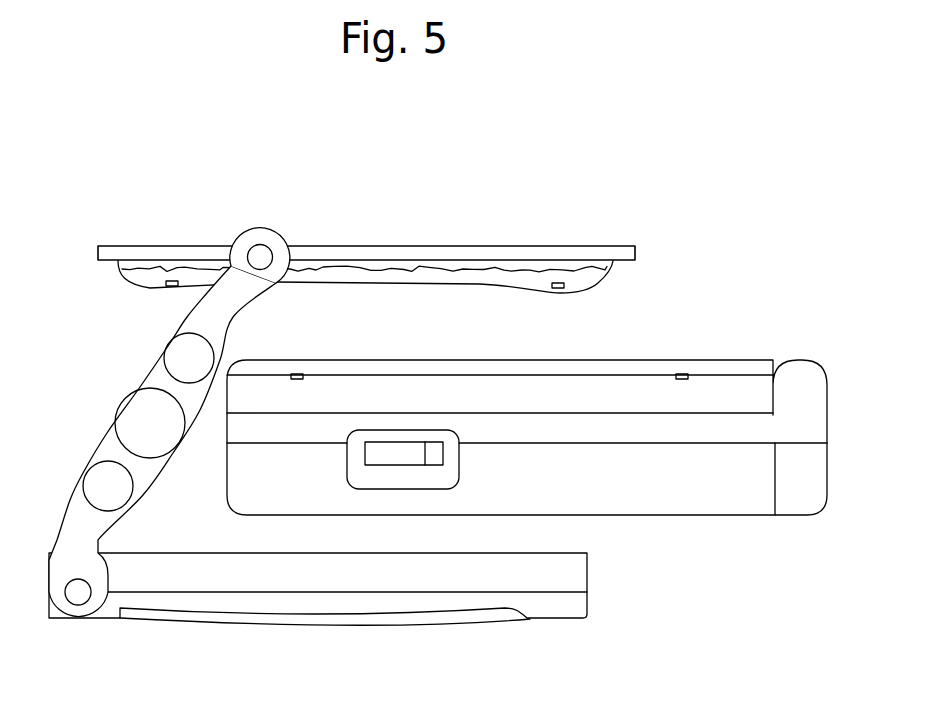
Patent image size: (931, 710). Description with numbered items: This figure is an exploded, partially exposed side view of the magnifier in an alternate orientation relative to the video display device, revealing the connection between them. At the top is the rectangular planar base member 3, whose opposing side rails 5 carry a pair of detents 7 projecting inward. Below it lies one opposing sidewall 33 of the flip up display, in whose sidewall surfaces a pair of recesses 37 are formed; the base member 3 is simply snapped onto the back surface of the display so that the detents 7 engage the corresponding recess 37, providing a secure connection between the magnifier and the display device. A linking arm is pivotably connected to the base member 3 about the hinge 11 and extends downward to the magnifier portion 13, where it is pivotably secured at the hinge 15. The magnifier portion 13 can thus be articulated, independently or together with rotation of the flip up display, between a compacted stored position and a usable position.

The base member 3 is at (480, 246).
The side rails 5 is at (582, 286).
The detents 7 is at (172, 287).
The hinge 11 is at (260, 257).
The magnifier portion 13 is at (587, 582).
The hinge 15 is at (78, 595).
The sidewall 33 is at (748, 390).
The recesses 37 is at (298, 374).